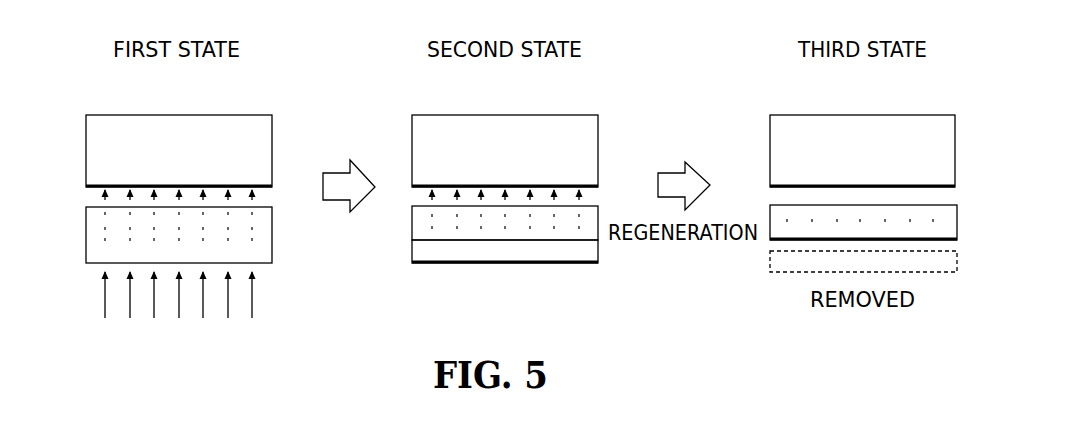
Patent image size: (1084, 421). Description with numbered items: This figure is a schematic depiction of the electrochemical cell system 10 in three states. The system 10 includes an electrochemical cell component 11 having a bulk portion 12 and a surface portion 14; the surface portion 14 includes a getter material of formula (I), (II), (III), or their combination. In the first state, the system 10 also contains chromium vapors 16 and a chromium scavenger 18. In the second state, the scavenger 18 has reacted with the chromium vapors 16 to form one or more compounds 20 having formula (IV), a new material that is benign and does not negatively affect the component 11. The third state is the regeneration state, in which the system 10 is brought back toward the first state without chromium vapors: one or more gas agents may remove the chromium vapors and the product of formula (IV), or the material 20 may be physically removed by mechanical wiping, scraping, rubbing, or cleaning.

The electrochemical cell system 10 is at (186, 121).
The electrochemical cell component 11 is at (160, 148).
The bulk portion 12 is at (222, 123).
The surface portion 14 is at (133, 180).
The chromium vapors 16 is at (258, 306).
The chromium scavenger 18 is at (410, 222).
The compounds having formula (IV) 20 is at (500, 258).